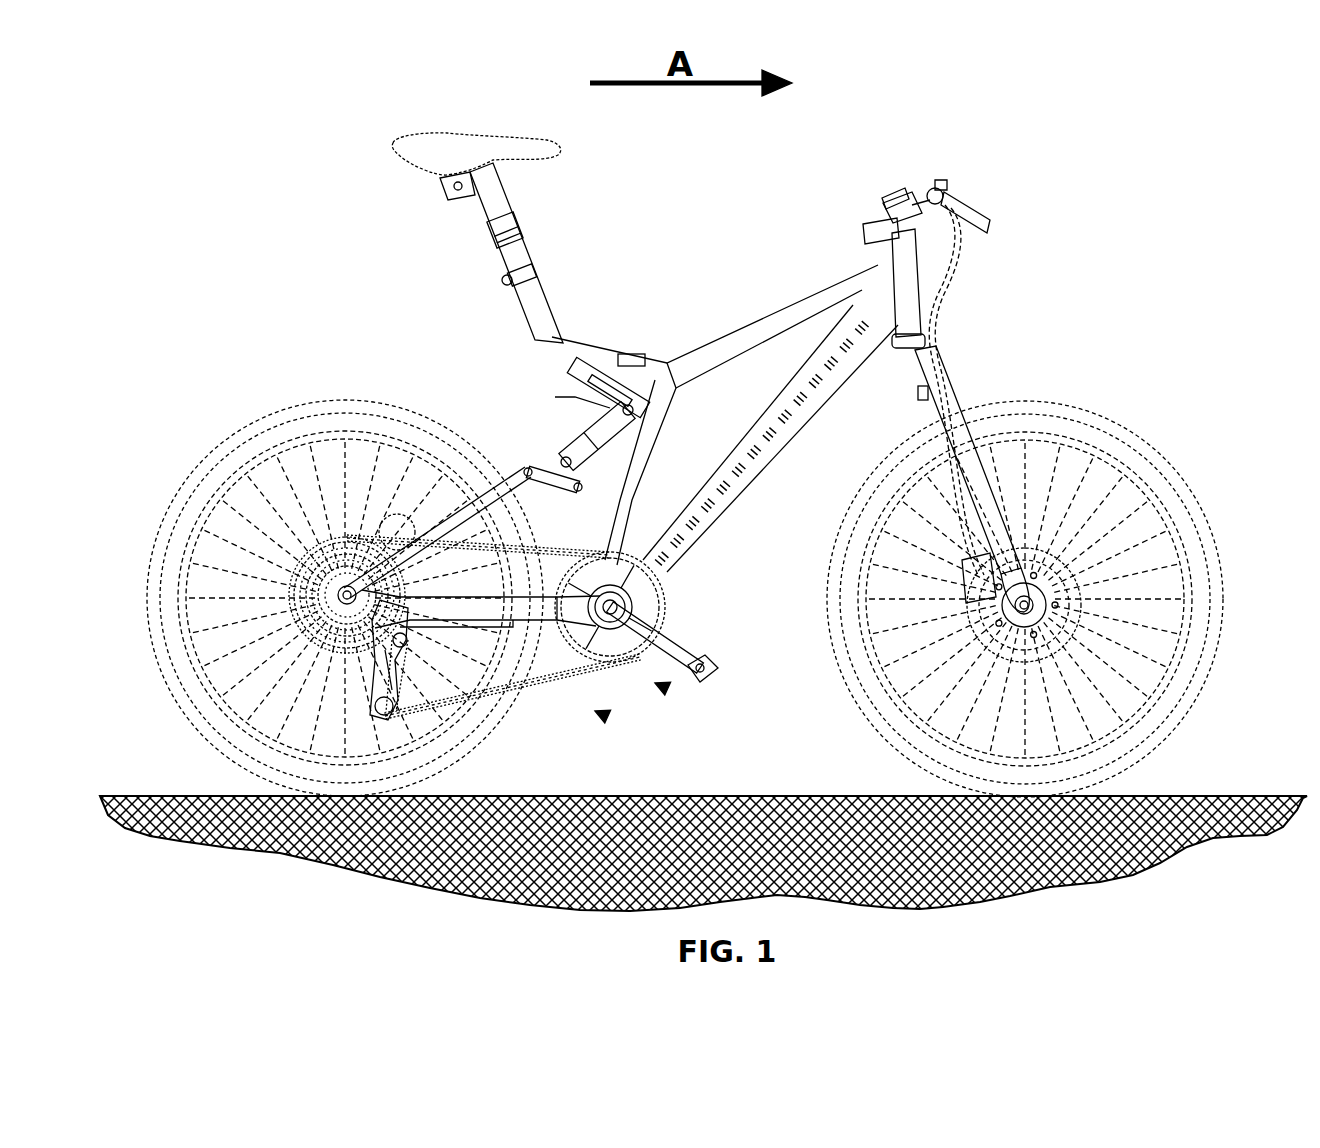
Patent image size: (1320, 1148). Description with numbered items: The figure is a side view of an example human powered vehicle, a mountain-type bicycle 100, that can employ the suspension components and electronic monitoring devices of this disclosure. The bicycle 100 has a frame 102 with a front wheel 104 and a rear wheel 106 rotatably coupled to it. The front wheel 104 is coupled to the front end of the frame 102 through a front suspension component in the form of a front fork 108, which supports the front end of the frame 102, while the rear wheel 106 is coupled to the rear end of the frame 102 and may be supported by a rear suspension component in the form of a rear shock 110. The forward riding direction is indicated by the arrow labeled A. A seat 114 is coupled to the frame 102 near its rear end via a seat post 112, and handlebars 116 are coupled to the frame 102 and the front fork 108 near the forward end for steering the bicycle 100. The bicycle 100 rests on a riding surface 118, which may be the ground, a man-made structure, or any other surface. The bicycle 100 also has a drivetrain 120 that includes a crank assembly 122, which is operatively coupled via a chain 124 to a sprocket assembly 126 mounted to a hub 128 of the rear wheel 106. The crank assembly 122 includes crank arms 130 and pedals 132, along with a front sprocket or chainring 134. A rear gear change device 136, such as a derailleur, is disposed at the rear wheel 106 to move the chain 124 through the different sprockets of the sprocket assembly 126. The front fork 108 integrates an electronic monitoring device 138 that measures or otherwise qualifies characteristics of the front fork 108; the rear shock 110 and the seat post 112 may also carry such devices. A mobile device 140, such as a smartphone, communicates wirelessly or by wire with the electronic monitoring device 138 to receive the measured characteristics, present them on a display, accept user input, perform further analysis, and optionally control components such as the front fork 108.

The bicycle 100 is at (264, 78).
The frame 102 is at (735, 340).
The front wheel 104 is at (1096, 420).
The rear wheel 106 is at (268, 428).
The front fork 108 is at (940, 396).
The rear shock 110 is at (565, 435).
The seat post 112 is at (495, 207).
The seat 114 is at (452, 148).
The handlebars 116 is at (948, 197).
The riding surface 118 is at (170, 796).
The drivetrain 120 is at (604, 715).
The crank assembly 122 is at (666, 688).
The chain 124 is at (545, 680).
The sprocket assembly 126 is at (322, 580).
The hub 128 is at (343, 597).
The crank arms 130 is at (683, 650).
The pedals 132 is at (718, 672).
The chainring 134 is at (650, 605).
The rear gear change device 136 is at (390, 677).
The electronic monitoring device 138 is at (920, 347).
The mobile device 140 is at (900, 196).